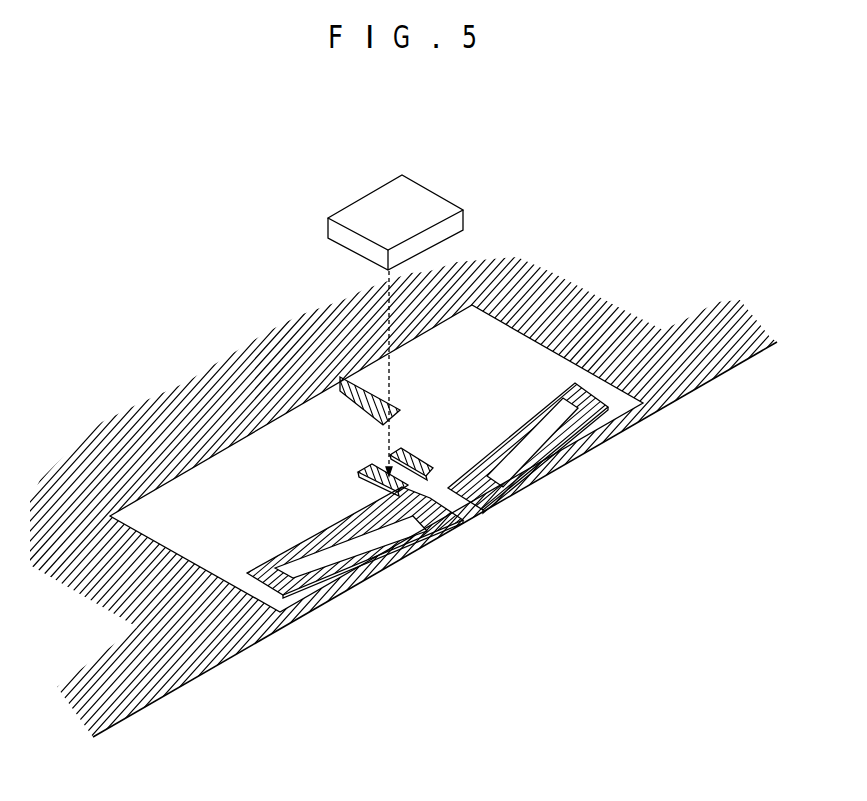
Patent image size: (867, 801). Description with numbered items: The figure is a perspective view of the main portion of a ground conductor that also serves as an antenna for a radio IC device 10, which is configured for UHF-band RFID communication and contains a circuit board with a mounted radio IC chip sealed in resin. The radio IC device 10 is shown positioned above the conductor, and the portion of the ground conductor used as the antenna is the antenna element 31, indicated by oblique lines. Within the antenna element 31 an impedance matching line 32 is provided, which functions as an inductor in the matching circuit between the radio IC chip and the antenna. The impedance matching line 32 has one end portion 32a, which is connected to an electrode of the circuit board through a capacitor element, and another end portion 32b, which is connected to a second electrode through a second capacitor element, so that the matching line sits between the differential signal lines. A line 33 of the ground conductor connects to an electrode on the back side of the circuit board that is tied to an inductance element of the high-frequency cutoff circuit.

The radio IC device 10 is at (379, 200).
The antenna element 31 is at (223, 659).
The impedance matching line 32 is at (307, 540).
The one end portion of the impedance matching line 32a is at (359, 470).
The one end portion of the impedance matching line 32b is at (402, 447).
The line of the ground conductor 33 is at (336, 390).